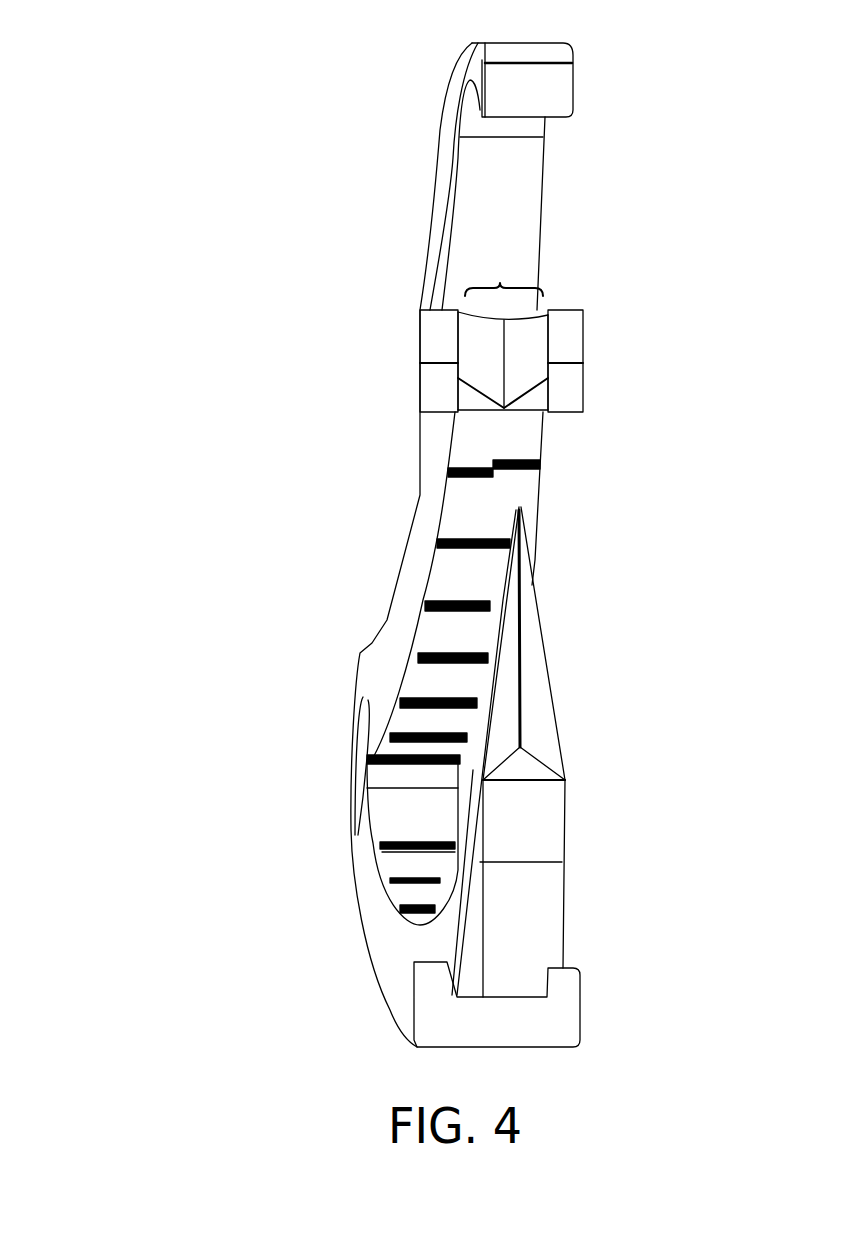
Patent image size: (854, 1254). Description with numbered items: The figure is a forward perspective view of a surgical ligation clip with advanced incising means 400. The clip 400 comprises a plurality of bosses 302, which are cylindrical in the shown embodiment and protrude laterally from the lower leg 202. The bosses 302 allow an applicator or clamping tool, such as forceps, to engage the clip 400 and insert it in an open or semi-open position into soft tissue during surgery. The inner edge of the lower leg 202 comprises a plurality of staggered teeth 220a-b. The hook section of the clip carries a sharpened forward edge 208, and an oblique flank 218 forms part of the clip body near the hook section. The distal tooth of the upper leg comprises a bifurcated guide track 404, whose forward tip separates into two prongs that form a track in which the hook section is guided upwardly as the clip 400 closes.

The surgical ligation clip with advanced incising means 400 is at (110, 148).
The oblique flank 218 is at (488, 150).
The bifurcated guide track 404 is at (500, 283).
The bosses 302 is at (555, 1023).
The staggered teeth 220a-b is at (458, 537).
The sharpened forward edge 208 is at (547, 700).
The lower leg 202 is at (493, 867).